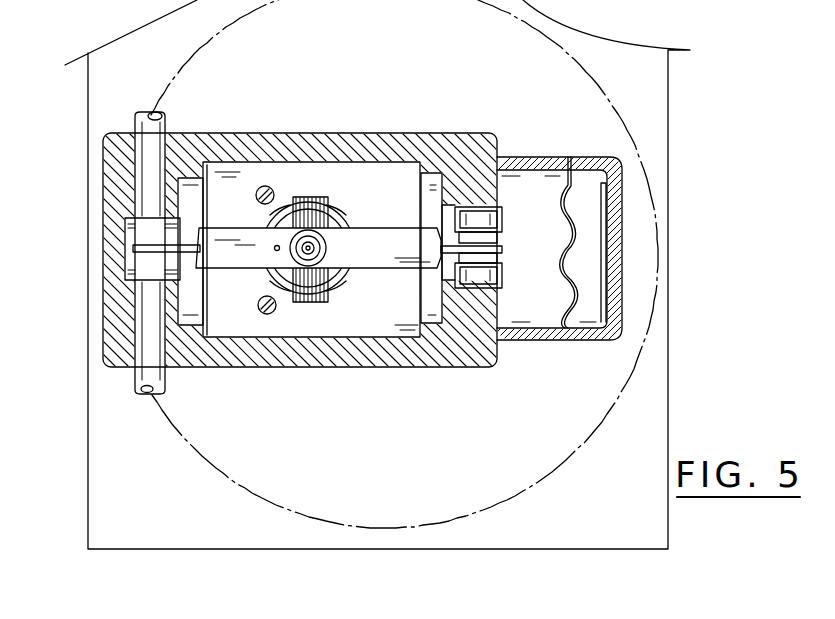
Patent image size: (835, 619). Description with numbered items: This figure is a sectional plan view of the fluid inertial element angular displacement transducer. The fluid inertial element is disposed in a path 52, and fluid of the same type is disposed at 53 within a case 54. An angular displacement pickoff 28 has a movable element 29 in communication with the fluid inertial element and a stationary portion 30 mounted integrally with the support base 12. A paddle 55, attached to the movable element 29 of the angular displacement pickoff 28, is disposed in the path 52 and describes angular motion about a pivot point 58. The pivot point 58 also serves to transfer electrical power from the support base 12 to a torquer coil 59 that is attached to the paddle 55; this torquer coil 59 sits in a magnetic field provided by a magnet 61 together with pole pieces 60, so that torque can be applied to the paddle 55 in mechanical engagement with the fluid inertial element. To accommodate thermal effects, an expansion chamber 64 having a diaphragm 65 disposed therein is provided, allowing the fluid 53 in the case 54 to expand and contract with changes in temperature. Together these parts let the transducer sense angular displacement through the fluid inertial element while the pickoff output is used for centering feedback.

The support base 12 is at (88, 100).
The angular displacement pickoff 28 is at (510, 233).
The movable element 29 is at (502, 250).
The stationary portion 30 is at (502, 240).
The path 52 is at (148, 113).
The fluid 53 is at (196, 196).
The case 54 is at (373, 141).
The paddle 55 is at (133, 249).
The pivot point 58 is at (326, 248).
The torquer coil 59 is at (270, 306).
The pole pieces 60 is at (308, 172).
The magnet 61 is at (345, 207).
The expansion chamber 64 is at (520, 183).
The diaphragm 65 is at (585, 248).